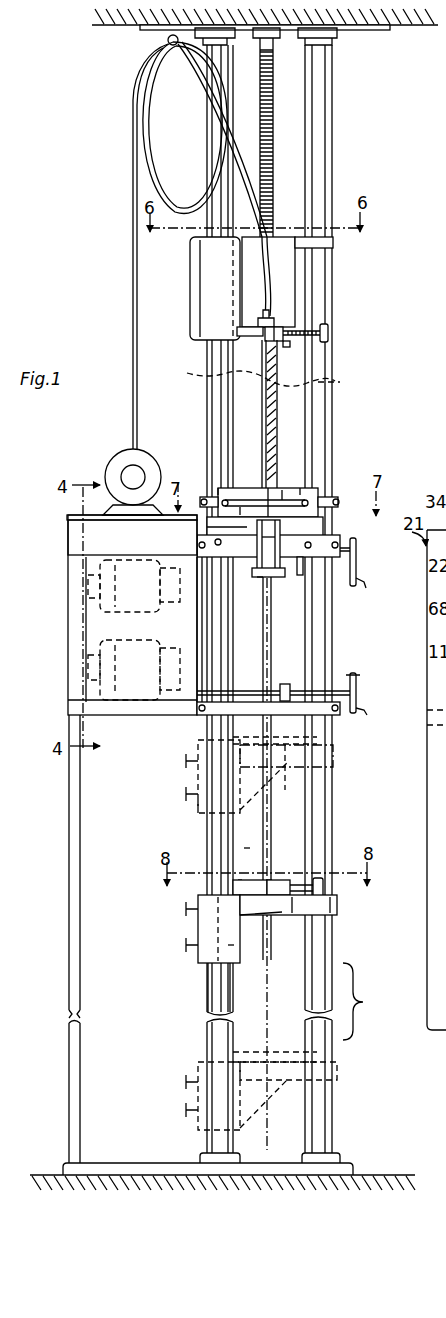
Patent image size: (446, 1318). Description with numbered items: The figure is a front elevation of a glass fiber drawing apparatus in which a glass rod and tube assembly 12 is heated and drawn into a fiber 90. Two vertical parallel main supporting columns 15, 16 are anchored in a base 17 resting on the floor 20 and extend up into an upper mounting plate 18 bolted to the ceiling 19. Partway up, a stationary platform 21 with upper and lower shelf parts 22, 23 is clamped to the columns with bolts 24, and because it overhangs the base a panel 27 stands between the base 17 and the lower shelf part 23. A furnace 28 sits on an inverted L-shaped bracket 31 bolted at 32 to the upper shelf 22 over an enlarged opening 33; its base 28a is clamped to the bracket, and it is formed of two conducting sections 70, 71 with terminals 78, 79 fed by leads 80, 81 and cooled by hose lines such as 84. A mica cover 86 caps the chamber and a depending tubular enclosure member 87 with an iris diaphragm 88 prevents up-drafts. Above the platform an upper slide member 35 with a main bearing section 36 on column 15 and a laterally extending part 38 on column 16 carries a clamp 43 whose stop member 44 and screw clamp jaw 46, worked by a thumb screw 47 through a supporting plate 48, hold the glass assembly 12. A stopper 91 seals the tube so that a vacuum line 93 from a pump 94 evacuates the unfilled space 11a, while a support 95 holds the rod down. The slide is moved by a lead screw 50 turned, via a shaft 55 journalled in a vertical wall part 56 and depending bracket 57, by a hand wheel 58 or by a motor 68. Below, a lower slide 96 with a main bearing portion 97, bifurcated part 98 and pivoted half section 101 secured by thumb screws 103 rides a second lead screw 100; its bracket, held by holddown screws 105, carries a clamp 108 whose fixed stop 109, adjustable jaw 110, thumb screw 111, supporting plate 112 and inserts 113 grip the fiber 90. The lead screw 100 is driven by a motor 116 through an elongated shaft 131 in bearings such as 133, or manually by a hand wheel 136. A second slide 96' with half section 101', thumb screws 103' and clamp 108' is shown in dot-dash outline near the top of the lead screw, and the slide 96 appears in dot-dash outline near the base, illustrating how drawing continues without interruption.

The ceiling 19 is at (396, 27).
The upper mounting plate 18 is at (347, 30).
The main supporting column 15 is at (207, 140).
The main supporting column 16 is at (325, 105).
The lead screw 50 is at (276, 139).
The vacuum line 93 is at (132, 135).
The upper slide member 35 is at (188, 284).
The main bearing section 36 is at (200, 318).
The laterally extending part 38 is at (332, 248).
The stopper 91 is at (269, 317).
The stop member 44 is at (250, 347).
The screw clamp jaw 46 is at (276, 344).
The supporting plate 48 is at (293, 321).
The thumb screw 47 is at (321, 330).
The clamp 43 is at (291, 344).
The support 95 is at (247, 375).
The unfilled space 11a is at (346, 372).
The glass rod and tube assembly 12 is at (284, 403).
The furnace 28 is at (320, 489).
The furnace base 28a is at (247, 501).
The cover 86 is at (284, 490).
The hose line 84 is at (241, 498).
The furnace section 71 is at (223, 484).
The furnace section 70 is at (304, 484).
The electrical terminal 79 is at (215, 486).
The lead 81 is at (209, 501).
The electrical terminal 78 is at (326, 494).
The lead 80 is at (324, 503).
The inverted L-shaped bracket 31 is at (312, 526).
The bolts 32 is at (341, 546).
The iris diaphragm 88 is at (276, 578).
The tubular enclosure member 87 is at (268, 546).
The shaft 55 is at (262, 578).
The depending bracket 57 is at (298, 575).
The hand wheel 58 is at (358, 566).
The fiber 90 is at (269, 640).
The stationary platform 21 is at (64, 548).
The upper shelf part 22 is at (100, 530).
The enlarged opening 33 is at (247, 530).
The motor 68 is at (100, 576).
The motor 116 is at (100, 649).
The lower shelf part 23 is at (127, 708).
The bolts 24 is at (199, 547).
The vertical wall part 56 is at (202, 657).
The elongated shaft 131 is at (247, 688).
The bearing 133 is at (286, 684).
The hand wheel 136 is at (357, 680).
The panel 27 is at (69, 922).
The second slide 96' is at (289, 775).
The thumb screws 103' is at (156, 777).
The half section 101' is at (163, 807).
The clamp 108' is at (295, 776).
The holddown screws 105 is at (255, 836).
The clamp 108 is at (288, 853).
The fixed stop 109 is at (240, 880).
The half section 101 is at (218, 892).
The adjustable jaw 110 is at (271, 886).
The fixed supporting plate 112 is at (292, 880).
The lower slide 96 is at (242, 1012).
The thumb screws 103 is at (165, 1004).
The thumb screw 111 is at (340, 906).
The bifurcated part 98 is at (296, 910).
The main bearing portion 97 is at (230, 946).
The inserts 113 is at (287, 912).
The lead screw 100 is at (208, 996).
The base 17 is at (270, 1165).
The floor 20 is at (356, 1176).
The pump 94 is at (120, 460).